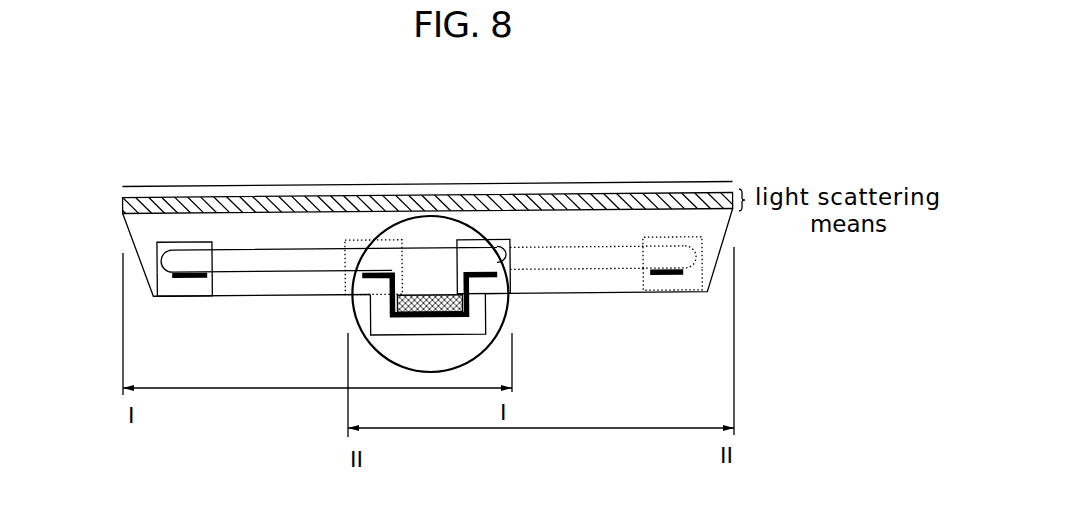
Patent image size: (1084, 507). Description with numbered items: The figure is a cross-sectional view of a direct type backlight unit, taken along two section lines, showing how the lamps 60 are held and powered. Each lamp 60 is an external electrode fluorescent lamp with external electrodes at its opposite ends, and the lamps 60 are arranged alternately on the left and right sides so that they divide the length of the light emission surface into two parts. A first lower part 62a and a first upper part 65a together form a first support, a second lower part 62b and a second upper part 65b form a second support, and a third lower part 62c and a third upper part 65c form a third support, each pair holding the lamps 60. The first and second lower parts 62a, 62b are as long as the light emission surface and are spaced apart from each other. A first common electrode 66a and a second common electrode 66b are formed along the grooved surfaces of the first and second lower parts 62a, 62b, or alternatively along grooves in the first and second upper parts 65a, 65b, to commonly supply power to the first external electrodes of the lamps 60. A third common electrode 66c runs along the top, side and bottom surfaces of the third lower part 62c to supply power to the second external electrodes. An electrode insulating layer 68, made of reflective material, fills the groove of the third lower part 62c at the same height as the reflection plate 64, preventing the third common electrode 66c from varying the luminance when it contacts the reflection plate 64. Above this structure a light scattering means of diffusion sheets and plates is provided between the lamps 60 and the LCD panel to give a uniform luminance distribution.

The lamp 60 is at (273, 257).
The first lower part 62a is at (170, 287).
The second lower part 62b is at (688, 287).
The third lower part 62c is at (465, 328).
The reflection plate 64 is at (253, 292).
The first upper part 65a is at (165, 238).
The second upper part 65b is at (690, 239).
The third upper part 65c is at (352, 239).
The first common electrode 66a is at (198, 264).
The second common electrode 66b is at (658, 269).
The third common electrode 66c is at (465, 308).
The electrode insulating layer 68 is at (423, 294).